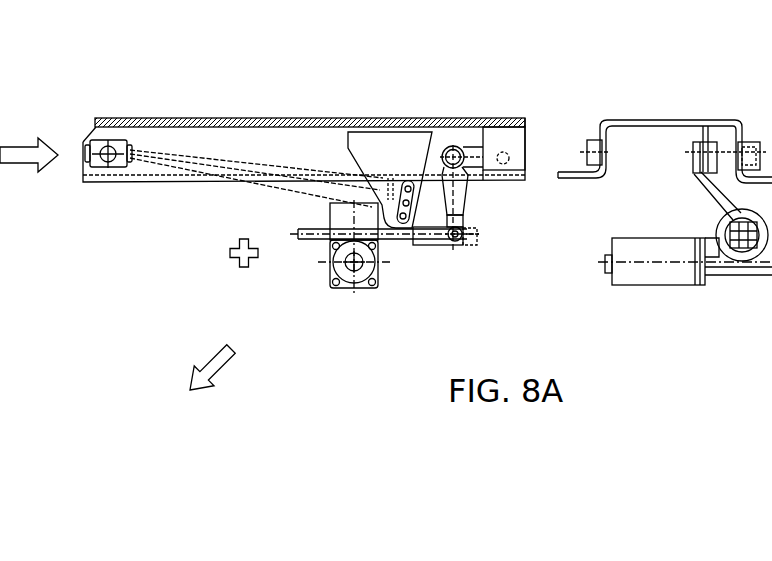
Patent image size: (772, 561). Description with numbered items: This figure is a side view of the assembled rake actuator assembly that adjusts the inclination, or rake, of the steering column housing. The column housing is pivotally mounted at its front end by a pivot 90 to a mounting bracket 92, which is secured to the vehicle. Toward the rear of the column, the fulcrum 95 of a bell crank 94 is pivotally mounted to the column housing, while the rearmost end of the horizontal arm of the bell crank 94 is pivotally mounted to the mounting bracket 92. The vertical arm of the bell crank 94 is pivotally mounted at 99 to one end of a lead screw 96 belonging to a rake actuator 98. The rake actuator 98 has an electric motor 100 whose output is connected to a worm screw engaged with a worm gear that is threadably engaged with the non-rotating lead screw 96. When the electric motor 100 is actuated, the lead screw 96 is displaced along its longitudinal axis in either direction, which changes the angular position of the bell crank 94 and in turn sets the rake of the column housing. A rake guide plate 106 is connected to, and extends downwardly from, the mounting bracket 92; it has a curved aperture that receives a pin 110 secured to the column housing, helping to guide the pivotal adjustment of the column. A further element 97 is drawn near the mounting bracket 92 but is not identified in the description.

The pivot 90 is at (106, 147).
The mounting bracket 92 is at (200, 108).
The bell crank 94 is at (466, 203).
The fulcrum 95 is at (451, 146).
The lead screw 96 is at (388, 237).
The pin 97 is at (509, 157).
The rake actuator 98 is at (366, 308).
The pivotal mounting 99 is at (468, 243).
The electric motor 100 is at (331, 272).
The rake guide plate 106 is at (385, 148).
The pin 110 is at (410, 228).